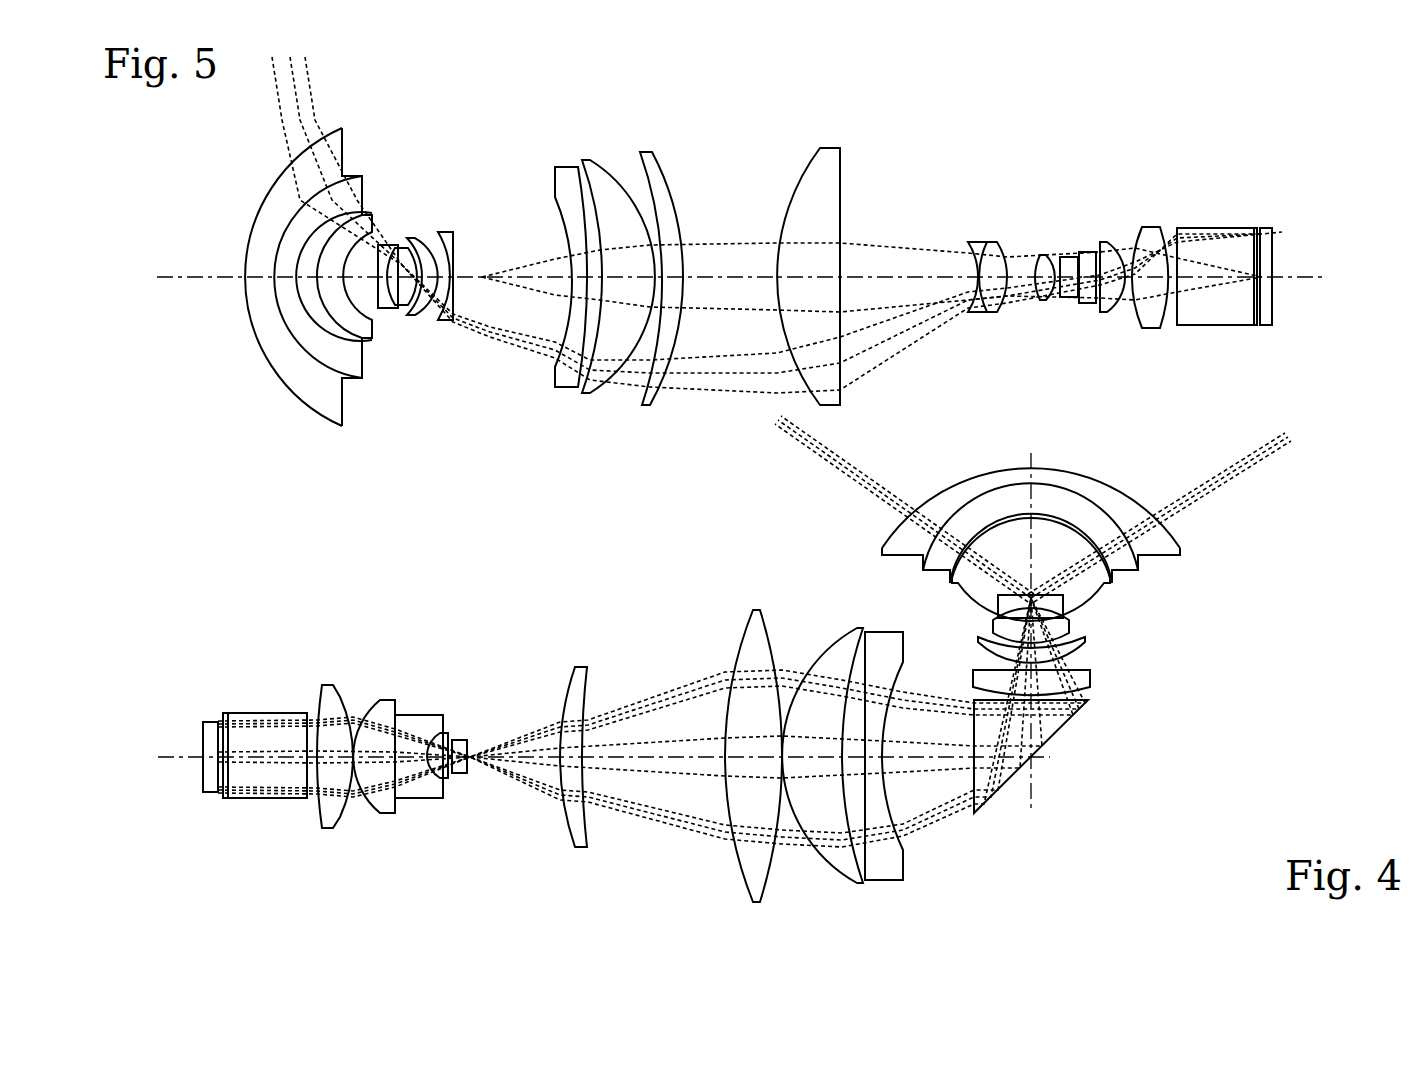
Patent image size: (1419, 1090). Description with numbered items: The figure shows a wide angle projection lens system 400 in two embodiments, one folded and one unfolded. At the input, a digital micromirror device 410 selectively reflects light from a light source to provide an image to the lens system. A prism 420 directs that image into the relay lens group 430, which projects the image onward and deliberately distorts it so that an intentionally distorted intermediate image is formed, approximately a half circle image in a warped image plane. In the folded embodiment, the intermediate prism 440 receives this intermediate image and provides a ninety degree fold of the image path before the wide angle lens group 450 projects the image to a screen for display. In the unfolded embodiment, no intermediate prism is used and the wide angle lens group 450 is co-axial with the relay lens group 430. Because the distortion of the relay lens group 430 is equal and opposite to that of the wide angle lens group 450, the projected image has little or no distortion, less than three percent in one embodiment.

In FIG. 4, the optical imaging system 400 is at (272, 606).
In FIG. 5, the digital micromirror device 410 is at (1264, 228).
In FIG. 4, the digital micromirror device 410 is at (212, 792).
In FIG. 5, the prism 420 is at (1217, 326).
In FIG. 4, the prism 420 is at (291, 713).
In FIG. 5, the relay lens group 430 is at (1153, 170).
In FIG. 4, the relay lens group 430 is at (910, 627).
In FIG. 4, the intermediate prism 440 is at (1050, 738).
In FIG. 5, the wide angle lens group 450 is at (465, 402).
In FIG. 4, the wide angle lens group 450 is at (1283, 407).